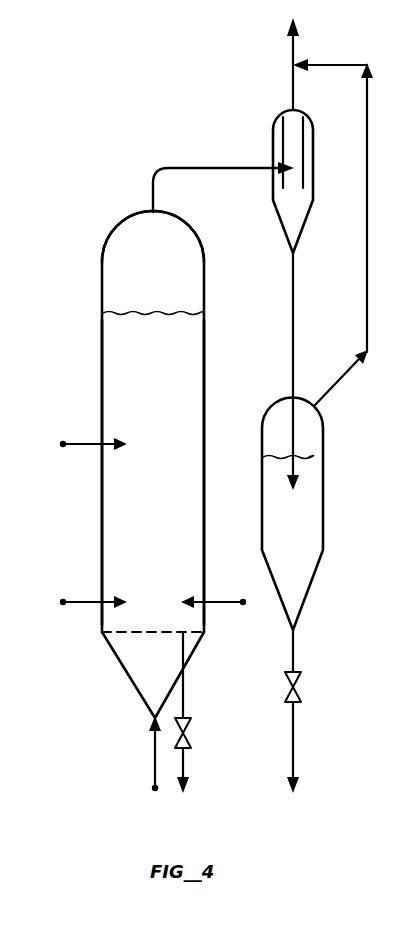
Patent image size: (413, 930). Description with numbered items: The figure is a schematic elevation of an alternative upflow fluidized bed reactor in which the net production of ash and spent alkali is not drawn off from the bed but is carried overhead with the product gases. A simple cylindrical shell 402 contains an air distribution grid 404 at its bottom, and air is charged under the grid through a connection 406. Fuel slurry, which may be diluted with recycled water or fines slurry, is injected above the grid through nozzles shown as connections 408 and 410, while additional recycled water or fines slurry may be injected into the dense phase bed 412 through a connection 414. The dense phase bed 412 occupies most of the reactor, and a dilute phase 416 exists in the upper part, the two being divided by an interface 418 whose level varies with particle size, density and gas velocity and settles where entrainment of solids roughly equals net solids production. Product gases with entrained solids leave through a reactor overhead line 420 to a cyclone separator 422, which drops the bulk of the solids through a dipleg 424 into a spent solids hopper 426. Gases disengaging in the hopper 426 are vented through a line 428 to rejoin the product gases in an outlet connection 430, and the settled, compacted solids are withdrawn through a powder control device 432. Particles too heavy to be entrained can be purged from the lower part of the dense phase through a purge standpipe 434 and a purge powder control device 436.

The cylindrical shell 402 is at (100, 353).
The air distribution grid 404 is at (148, 632).
The connection 406 is at (153, 762).
The connection 408 is at (80, 601).
The connection 410 is at (228, 601).
The dense phase bed 412 is at (150, 500).
The connection 414 is at (80, 443).
The dilute phase 416 is at (140, 268).
The interface 418 is at (175, 312).
The reactor overhead line 420 is at (205, 167).
The cyclone separator 422 is at (277, 218).
The dipleg 424 is at (292, 370).
The spent solids hopper 426 is at (323, 530).
The line 428 is at (367, 343).
The outlet connection 430 is at (290, 53).
The powder control device 432 is at (302, 692).
The purge standpipe 434 is at (185, 698).
The purge powder control device 436 is at (193, 738).